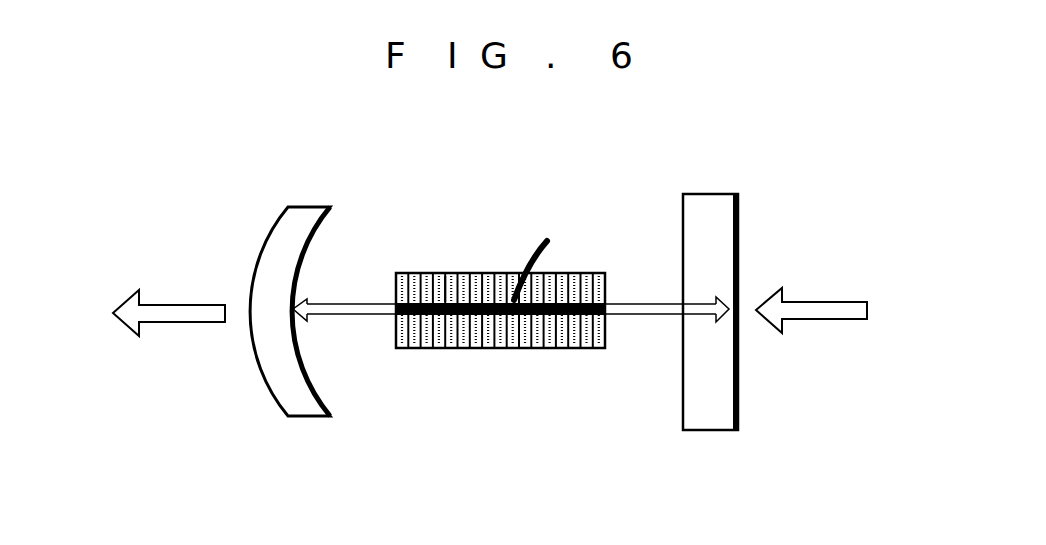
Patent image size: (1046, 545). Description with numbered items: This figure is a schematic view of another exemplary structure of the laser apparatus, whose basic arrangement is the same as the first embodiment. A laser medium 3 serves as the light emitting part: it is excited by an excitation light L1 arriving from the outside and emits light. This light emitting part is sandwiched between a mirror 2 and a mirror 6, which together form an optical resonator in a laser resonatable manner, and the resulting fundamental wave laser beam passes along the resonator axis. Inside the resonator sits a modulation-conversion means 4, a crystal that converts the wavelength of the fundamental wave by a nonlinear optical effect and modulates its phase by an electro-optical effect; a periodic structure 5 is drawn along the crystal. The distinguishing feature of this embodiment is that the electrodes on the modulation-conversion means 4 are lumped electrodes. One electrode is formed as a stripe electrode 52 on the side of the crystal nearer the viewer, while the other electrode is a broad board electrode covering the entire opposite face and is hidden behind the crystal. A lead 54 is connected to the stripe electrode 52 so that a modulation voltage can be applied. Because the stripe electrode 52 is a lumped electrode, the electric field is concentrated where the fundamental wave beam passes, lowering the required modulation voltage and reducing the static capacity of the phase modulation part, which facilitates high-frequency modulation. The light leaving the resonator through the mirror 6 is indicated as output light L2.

The mirror 2 is at (735, 258).
The laser medium 3 is at (717, 218).
The modulation-conversion means 4 is at (500, 312).
The periodic domain-inverted structure 5 is at (546, 320).
The stripe electrode 52 is at (445, 300).
The lead 54 is at (554, 237).
The mirror 6 is at (270, 233).
The excitation light L1 is at (828, 308).
The output harmonic light L2 is at (183, 305).